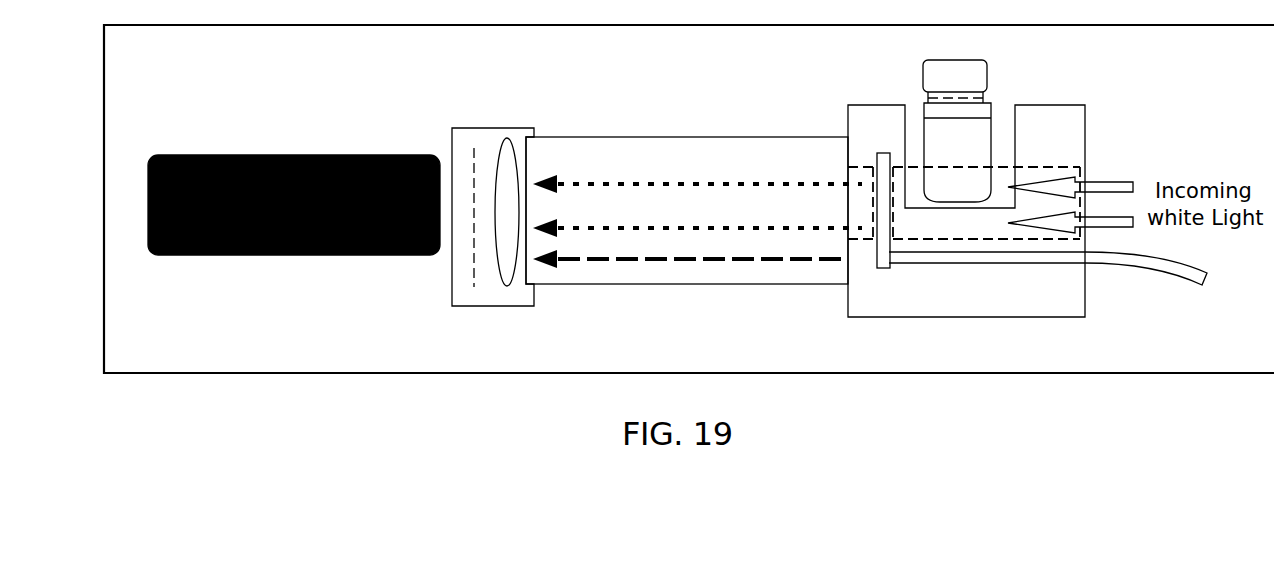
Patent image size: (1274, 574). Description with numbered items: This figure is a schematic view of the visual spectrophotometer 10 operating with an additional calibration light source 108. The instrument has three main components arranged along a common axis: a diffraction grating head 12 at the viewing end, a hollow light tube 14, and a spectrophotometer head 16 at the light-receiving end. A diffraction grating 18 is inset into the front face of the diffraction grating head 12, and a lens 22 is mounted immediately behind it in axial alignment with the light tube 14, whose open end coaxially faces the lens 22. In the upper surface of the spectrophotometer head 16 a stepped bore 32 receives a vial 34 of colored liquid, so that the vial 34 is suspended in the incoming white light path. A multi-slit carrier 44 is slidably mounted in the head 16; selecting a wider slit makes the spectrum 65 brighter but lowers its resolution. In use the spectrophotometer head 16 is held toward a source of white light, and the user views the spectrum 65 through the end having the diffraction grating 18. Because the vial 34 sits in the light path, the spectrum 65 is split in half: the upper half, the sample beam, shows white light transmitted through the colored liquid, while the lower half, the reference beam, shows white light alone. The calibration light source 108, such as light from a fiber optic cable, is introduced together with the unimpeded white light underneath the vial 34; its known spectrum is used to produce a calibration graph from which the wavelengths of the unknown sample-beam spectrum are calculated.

The visual spectrophotometer 10 is at (614, 104).
The diffraction grating head 12 is at (446, 292).
The hollow light tube 14 is at (703, 131).
The spectrophotometer head 16 is at (1098, 305).
The diffraction grating 18 is at (473, 149).
The lens 22 is at (507, 200).
The stepped bore 32 is at (1012, 122).
The vial 34 is at (974, 107).
The multi-slit carrier 44 is at (882, 153).
The spectrum 65 is at (279, 266).
The calibration light source 108 is at (1190, 273).